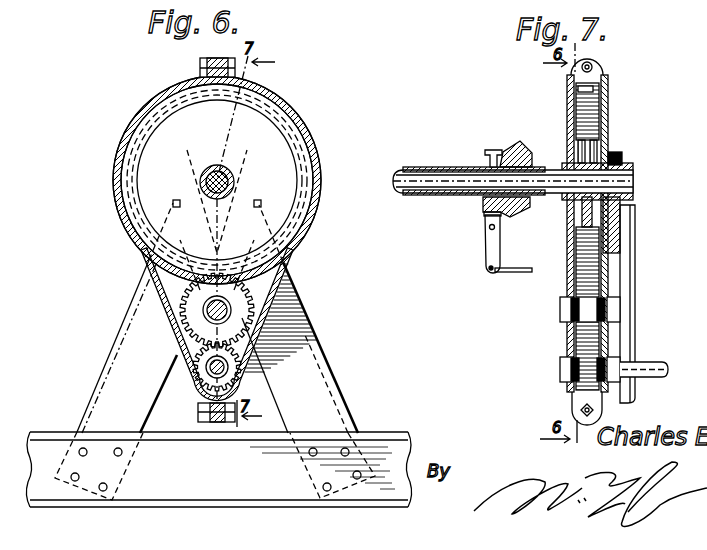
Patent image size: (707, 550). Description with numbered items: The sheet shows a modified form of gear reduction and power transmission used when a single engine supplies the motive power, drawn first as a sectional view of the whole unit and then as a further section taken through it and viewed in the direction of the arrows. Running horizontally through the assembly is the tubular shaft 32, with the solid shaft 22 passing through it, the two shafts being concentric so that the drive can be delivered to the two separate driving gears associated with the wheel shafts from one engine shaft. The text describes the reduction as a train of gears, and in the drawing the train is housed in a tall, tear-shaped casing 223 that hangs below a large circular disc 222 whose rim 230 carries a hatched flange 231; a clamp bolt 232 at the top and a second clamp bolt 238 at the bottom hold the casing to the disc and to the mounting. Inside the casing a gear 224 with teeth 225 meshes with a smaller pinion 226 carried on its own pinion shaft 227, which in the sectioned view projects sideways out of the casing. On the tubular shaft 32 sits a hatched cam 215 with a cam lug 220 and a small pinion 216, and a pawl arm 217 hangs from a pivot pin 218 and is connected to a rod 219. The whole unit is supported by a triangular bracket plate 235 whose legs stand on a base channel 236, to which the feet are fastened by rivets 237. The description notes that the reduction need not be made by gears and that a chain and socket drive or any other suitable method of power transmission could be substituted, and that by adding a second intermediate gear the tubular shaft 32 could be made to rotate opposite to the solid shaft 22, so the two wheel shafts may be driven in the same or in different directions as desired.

In FIG. 6, the solid shaft 22 is at (211, 168).
In FIG. 7, the solid shaft 22 is at (400, 178).
In FIG. 6, the tubular shaft 32 is at (224, 168).
In FIG. 7, the tubular shaft 32 is at (423, 160).
In FIG. 7, the cam 215 is at (513, 147).
In FIG. 7, the pinion 216 is at (489, 151).
In FIG. 7, the pawl arm 217 is at (485, 240).
In FIG. 7, the pivot pin 218 is at (488, 227).
In FIG. 7, the rod 219 is at (513, 269).
In FIG. 7, the cam lug 220 is at (524, 152).
In FIG. 6, the disc 222 is at (293, 120).
In FIG. 7, the disc 222 is at (609, 106).
In FIG. 6, the gear housing 223 is at (150, 268).
In FIG. 7, the gear housing 223 is at (590, 87).
In FIG. 6, the gear 224 is at (204, 310).
In FIG. 7, the gear 224 is at (592, 283).
In FIG. 6, the gear teeth 225 is at (188, 322).
In FIG. 6, the pinion 226 is at (200, 355).
In FIG. 7, the pinion 226 is at (588, 355).
In FIG. 6, the pinion shaft 227 is at (207, 365).
In FIG. 7, the pinion shaft 227 is at (646, 362).
In FIG. 6, the rim 230 is at (307, 128).
In FIG. 6, the flange 231 is at (116, 155).
In FIG. 6, the clamp bolt 232 is at (200, 64).
In FIG. 6, the bracket plate 235 is at (305, 347).
In FIG. 6, the base channel 236 is at (108, 390).
In FIG. 6, the rivets 237 is at (327, 483).
In FIG. 6, the clamp bolt 238 is at (176, 440).